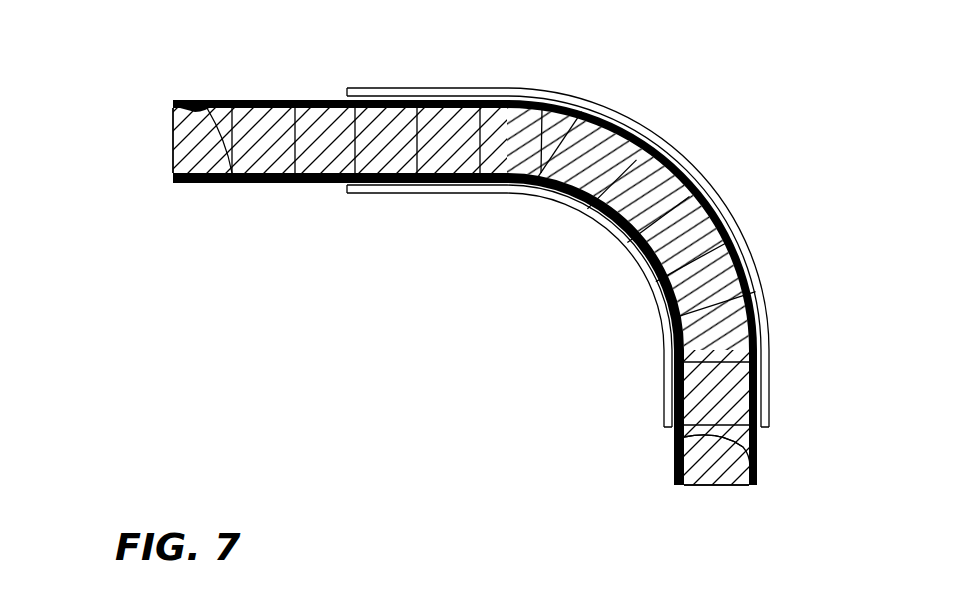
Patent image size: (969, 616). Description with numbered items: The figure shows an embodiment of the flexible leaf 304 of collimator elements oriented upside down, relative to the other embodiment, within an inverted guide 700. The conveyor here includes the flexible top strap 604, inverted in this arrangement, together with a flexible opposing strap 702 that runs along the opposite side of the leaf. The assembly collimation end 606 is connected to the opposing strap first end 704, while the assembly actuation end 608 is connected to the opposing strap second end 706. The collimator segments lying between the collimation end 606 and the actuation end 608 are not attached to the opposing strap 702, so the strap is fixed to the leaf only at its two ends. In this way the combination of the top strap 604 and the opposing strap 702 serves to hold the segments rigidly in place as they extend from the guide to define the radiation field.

The inverted guide 700 is at (598, 108).
The flexible opposing strap 702 is at (290, 99).
The opposing strap first end 704 is at (225, 183).
The flexible top strap 604 is at (280, 183).
The assembly collimation end 606 is at (158, 148).
The assembly actuation end 608 is at (702, 495).
The flexible leaf 304 is at (165, 215).
The opposing strap second end 706 is at (683, 438).